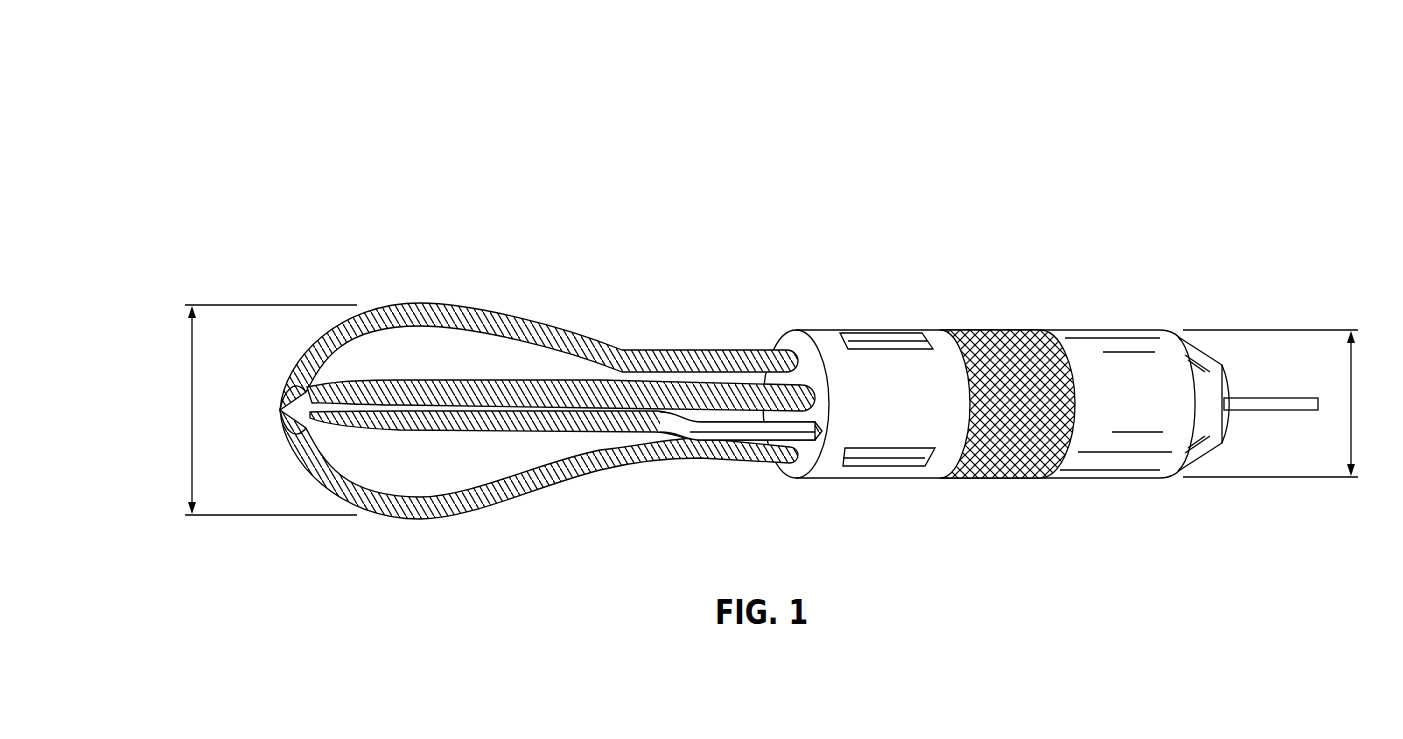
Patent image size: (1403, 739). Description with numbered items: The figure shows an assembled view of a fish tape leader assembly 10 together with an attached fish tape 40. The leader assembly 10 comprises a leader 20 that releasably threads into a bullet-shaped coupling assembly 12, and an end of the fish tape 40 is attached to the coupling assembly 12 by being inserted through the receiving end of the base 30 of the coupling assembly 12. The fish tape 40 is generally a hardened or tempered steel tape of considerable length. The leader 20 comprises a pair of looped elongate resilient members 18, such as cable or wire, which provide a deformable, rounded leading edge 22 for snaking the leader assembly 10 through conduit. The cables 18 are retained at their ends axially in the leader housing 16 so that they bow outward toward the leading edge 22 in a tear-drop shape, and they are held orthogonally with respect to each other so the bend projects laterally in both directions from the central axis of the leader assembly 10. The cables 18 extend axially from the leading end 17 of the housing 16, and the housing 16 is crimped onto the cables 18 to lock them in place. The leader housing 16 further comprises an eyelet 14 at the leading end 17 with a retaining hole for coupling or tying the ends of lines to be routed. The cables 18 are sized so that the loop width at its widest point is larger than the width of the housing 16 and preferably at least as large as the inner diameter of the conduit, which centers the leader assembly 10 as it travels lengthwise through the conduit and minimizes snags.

The fish tape leader assembly 10 is at (240, 124).
The coupling assembly 12 is at (1202, 276).
The eyelet 14 is at (718, 445).
The leader housing 16 is at (828, 332).
The leading end 17 is at (782, 470).
The looped elongate resilient members 18 is at (430, 427).
The leader 20 is at (325, 265).
The leading edge 22 is at (290, 432).
The base 30 is at (1103, 462).
The fish tape 40 is at (1238, 397).